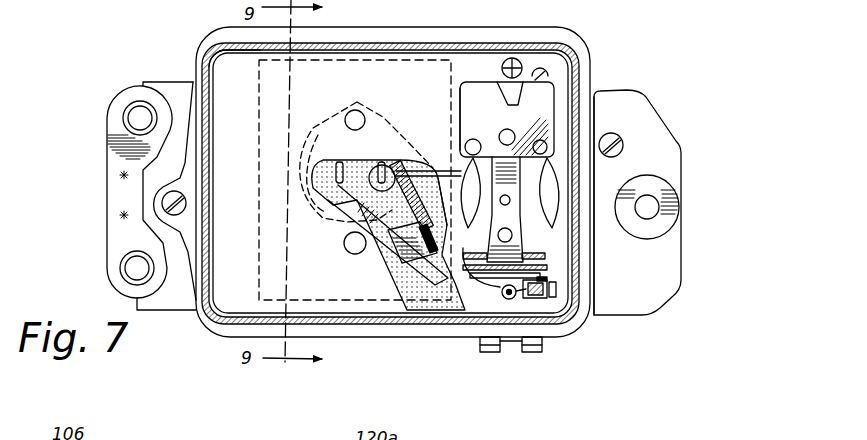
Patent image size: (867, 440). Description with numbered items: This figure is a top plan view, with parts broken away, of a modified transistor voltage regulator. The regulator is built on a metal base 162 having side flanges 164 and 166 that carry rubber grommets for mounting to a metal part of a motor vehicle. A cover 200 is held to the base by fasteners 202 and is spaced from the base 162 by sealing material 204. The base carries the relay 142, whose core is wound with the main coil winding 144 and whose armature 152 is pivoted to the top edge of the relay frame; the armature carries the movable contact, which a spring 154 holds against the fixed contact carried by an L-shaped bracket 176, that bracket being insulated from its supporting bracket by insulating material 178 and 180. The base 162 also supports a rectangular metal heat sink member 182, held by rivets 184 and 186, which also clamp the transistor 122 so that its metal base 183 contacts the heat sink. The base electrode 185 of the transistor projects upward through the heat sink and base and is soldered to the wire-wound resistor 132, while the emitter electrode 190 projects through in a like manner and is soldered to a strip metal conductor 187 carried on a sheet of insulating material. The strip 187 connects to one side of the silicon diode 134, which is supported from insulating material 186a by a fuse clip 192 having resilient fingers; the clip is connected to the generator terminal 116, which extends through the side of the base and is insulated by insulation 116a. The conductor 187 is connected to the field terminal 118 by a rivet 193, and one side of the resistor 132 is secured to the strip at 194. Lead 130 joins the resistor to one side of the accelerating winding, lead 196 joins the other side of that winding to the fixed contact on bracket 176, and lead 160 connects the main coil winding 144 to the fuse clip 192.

The generator terminal 116 is at (537, 353).
The insulation 116a is at (512, 353).
The field terminal 118 is at (484, 352).
The transistor 122 is at (325, 218).
The lead 130 is at (440, 152).
The resistor 132 is at (440, 201).
The silicon diode 134 is at (513, 297).
The relay 142 is at (594, 113).
The main coil winding 144 is at (550, 187).
The armature 152 is at (472, 80).
The spring 154 is at (519, 65).
The lead 160 is at (546, 258).
The metal base 162 is at (373, 80).
The side flange 164 is at (647, 127).
The side flange 166 is at (175, 88).
The L-shaped bracket 176 is at (518, 248).
The insulating material 178 is at (561, 296).
The insulating material 180 is at (543, 282).
The heat sink member 182 is at (258, 180).
The metal base 183 is at (391, 157).
The rivet 184 is at (352, 108).
The base electrode 185 is at (386, 162).
The rivet 186 is at (352, 242).
The insulating material 186a is at (420, 170).
The strip metal conductor 187 is at (427, 273).
The emitter electrode 190 is at (337, 167).
The fuse clip 192 is at (538, 300).
The rivet 193 is at (508, 300).
The connection point 194 is at (403, 250).
The lead 196 is at (483, 197).
The cover 200 is at (578, 68).
The fasteners 202 is at (163, 195).
The sealing material 204 is at (248, 52).